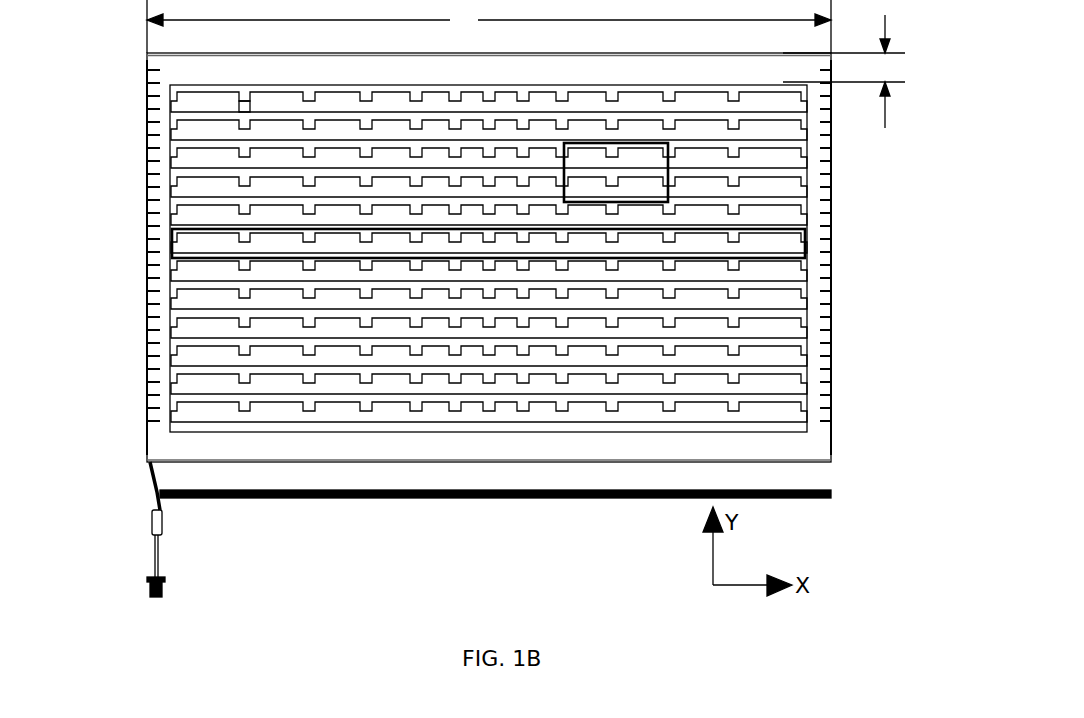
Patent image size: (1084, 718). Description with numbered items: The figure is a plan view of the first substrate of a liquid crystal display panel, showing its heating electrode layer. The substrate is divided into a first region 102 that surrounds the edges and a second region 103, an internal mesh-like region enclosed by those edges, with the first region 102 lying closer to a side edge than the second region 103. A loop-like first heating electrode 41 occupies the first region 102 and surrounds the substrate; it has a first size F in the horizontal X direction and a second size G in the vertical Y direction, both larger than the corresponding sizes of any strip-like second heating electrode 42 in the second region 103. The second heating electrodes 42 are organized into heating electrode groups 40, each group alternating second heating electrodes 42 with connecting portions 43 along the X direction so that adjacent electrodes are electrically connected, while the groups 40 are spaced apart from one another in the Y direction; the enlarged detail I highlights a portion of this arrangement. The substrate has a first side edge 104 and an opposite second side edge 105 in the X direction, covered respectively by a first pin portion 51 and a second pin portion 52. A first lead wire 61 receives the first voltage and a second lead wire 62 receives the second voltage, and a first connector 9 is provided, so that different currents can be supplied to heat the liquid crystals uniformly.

The first region 102 is at (178, 75).
The second region 103 is at (441, 291).
The first side edge 104 is at (147, 300).
The second side edge 105 is at (830, 212).
The heating electrode group 40 is at (172, 247).
The first heating electrode 41 is at (342, 440).
The second heating electrode 42 is at (208, 105).
The connecting portion 43 is at (245, 98).
The first pin portion 51 is at (155, 377).
The second pin portion 52 is at (823, 368).
The first lead wire 61 is at (153, 475).
The second lead wire 62 is at (529, 497).
The first connector 9 is at (165, 590).
The first size F is at (489, 26).
The second size G is at (860, 147).
The region I is at (668, 172).